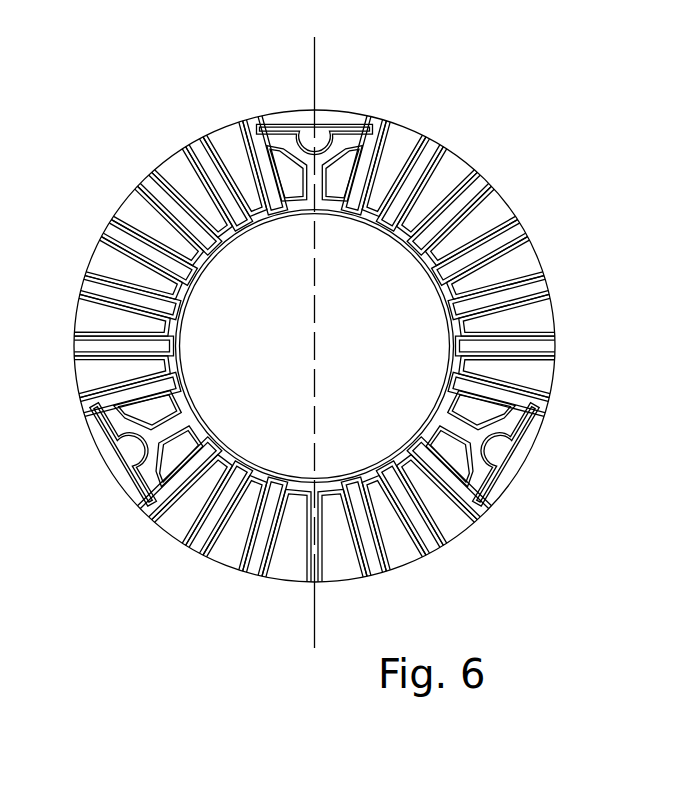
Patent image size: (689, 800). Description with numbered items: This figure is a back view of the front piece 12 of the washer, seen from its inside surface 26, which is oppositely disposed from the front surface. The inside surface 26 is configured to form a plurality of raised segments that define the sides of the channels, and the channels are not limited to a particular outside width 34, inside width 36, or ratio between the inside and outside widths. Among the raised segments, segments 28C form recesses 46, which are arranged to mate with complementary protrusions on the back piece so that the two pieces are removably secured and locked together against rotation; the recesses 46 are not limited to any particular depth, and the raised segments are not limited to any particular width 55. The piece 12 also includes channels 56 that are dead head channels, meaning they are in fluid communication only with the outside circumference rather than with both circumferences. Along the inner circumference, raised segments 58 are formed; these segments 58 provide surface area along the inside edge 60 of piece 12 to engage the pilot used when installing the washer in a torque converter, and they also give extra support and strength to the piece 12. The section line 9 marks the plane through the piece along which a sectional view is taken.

The section line 9- 9 is at (314, 648).
The front piece 12 is at (402, 122).
The inside surface 26 is at (456, 518).
The segments 28C is at (150, 528).
The outside width 34 is at (183, 65).
The inside width 36 is at (298, 240).
The recesses 46 is at (113, 463).
The width 55 is at (605, 402).
The channels 56 is at (485, 208).
The raised segments 58 is at (447, 273).
The inside edge 60 is at (422, 261).